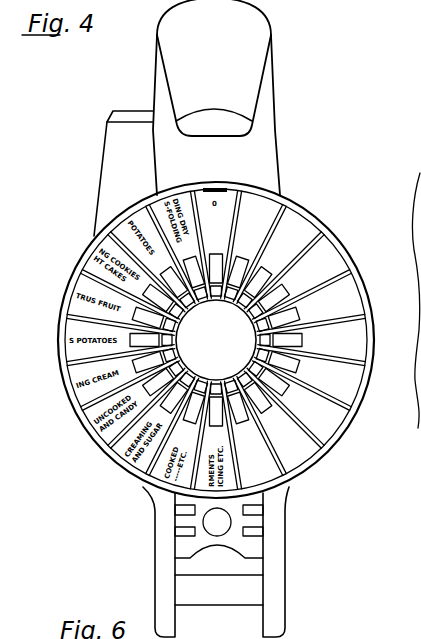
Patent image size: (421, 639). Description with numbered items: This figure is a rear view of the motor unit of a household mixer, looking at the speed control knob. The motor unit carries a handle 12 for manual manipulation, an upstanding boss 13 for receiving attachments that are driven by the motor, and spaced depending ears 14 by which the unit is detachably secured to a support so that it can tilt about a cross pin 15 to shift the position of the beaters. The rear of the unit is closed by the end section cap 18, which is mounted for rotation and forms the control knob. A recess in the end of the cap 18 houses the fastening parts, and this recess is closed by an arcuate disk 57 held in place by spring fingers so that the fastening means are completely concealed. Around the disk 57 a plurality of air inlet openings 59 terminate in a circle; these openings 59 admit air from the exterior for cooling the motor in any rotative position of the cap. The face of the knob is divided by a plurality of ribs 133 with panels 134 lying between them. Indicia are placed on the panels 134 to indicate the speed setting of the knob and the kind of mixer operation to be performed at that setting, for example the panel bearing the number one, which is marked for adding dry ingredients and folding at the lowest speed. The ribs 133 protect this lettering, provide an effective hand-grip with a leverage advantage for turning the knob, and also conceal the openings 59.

The handle 12 is at (216, 97).
The upstanding boss 13 is at (117, 143).
The depending ears 14 is at (268, 620).
The cross pin 15 is at (207, 592).
The end section cap 18 is at (297, 232).
The arcuate disk 57 is at (216, 340).
The air inlet openings 59 is at (286, 291).
The ribs 133 is at (358, 402).
The panels 134 is at (350, 335).